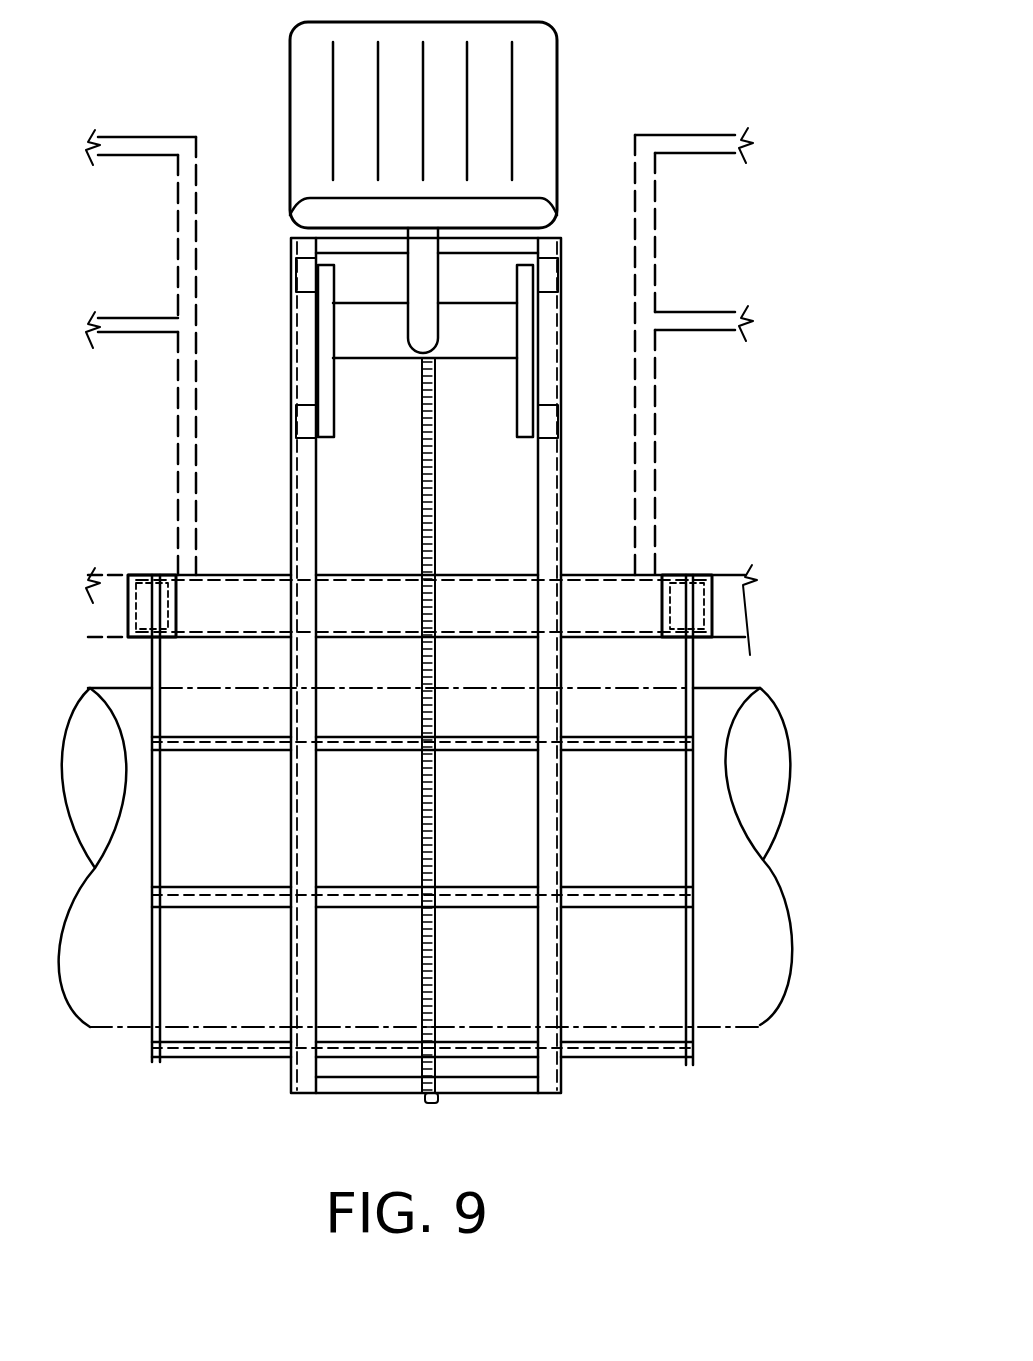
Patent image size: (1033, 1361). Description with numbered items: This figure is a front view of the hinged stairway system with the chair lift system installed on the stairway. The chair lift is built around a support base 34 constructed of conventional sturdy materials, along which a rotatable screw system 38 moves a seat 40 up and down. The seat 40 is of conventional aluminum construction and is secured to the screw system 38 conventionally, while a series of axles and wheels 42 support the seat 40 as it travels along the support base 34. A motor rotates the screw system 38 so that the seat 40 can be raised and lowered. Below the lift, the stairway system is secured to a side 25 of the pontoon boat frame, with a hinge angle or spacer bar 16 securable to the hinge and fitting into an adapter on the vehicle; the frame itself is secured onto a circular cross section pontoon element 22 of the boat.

The seat 40 is at (533, 68).
The axles and wheels 42 is at (548, 420).
The rotatable screw system 38 is at (437, 507).
The side of frame 25 is at (728, 590).
The hinge angle or spacer bar 16 is at (698, 610).
The pontoon element 22 is at (757, 743).
The support base 34 is at (560, 955).